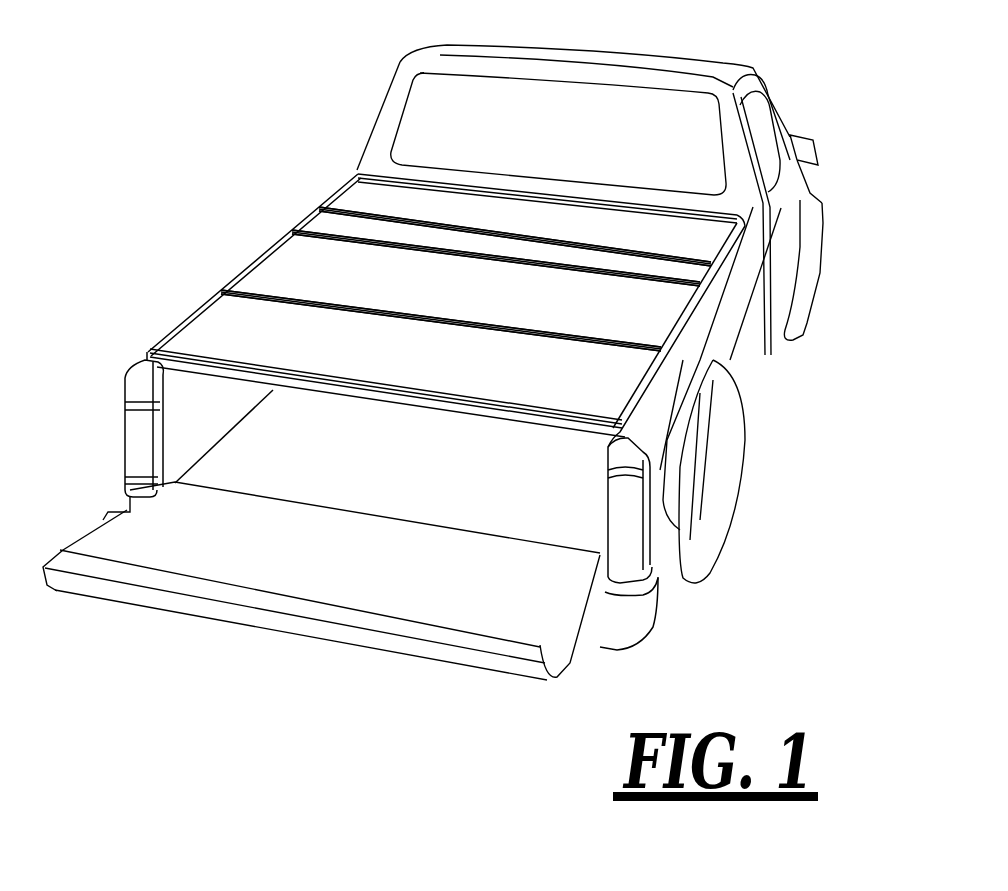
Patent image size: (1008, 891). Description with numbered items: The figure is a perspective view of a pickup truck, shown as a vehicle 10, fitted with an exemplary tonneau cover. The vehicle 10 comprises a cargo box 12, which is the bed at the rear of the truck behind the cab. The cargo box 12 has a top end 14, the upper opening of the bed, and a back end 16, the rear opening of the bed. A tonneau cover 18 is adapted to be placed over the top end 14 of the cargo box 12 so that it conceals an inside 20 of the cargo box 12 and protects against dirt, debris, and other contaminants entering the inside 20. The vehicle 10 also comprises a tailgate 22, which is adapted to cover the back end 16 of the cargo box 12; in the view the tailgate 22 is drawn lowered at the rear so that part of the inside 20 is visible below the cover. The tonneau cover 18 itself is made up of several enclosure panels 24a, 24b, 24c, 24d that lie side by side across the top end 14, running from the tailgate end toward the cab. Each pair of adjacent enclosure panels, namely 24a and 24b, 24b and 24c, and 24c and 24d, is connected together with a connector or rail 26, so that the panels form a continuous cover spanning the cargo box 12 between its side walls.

The vehicle 10 is at (367, 33).
The cargo box 12 is at (753, 355).
The top end 14 is at (165, 372).
The back end 16 is at (165, 473).
The tonneau cover 18 is at (710, 239).
The inside 20 is at (563, 493).
The tailgate 22 is at (183, 603).
The enclosure panel 24a is at (187, 341).
The enclosure panel 24b is at (260, 283).
The enclosure panel 24c is at (327, 230).
The enclosure panel 24d is at (377, 198).
The connector or rail 26 is at (284, 228).